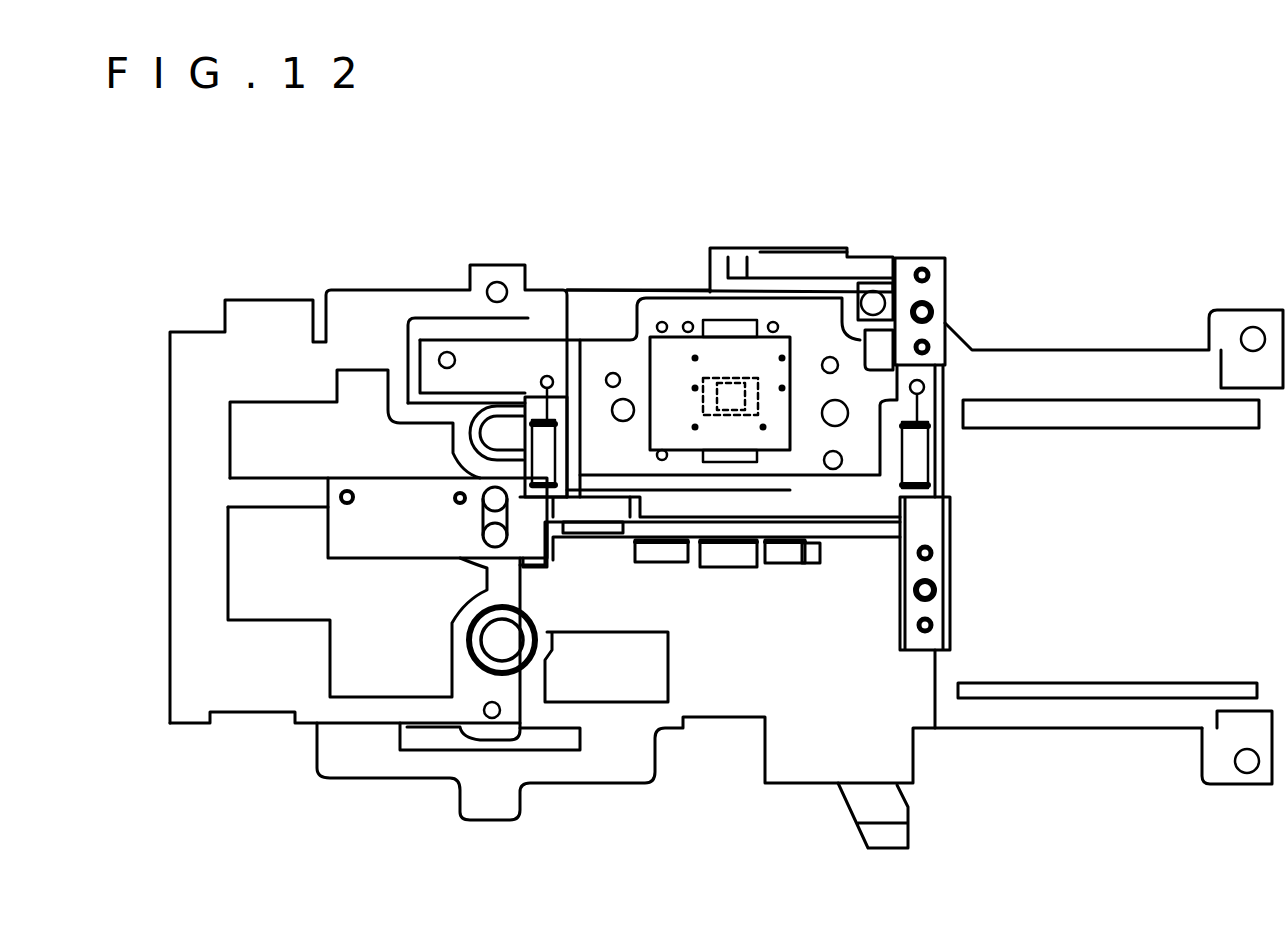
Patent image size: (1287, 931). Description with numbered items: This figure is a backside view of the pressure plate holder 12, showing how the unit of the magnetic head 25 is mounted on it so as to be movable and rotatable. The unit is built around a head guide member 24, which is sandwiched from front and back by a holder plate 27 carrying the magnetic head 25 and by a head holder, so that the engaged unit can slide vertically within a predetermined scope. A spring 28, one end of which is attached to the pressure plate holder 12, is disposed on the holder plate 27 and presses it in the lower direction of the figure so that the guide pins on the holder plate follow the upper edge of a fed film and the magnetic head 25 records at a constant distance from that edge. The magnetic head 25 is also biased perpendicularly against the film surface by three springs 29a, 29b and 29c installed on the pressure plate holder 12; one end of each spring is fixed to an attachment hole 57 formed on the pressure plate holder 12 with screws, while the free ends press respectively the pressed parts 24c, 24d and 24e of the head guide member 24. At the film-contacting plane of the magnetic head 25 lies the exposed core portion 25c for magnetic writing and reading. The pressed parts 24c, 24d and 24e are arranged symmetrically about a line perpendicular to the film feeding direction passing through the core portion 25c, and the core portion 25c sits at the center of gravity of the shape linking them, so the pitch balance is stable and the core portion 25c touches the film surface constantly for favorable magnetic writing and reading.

The pressure plate holder 12 is at (258, 318).
The head guide member 24 is at (740, 540).
The pressed part 24c is at (723, 257).
The pressed part 24d is at (658, 540).
The pressed part 24e is at (805, 552).
The magnetic head 25 is at (795, 368).
The core portion 25c is at (703, 393).
The holder plate 27 is at (617, 357).
The spring 28 is at (556, 433).
The spring for pressing magnetic head 29a is at (793, 263).
The spring for pressing magnetic head 29b is at (423, 540).
The spring for pressing magnetic head 29c is at (935, 510).
The attachment hole 57 is at (940, 312).